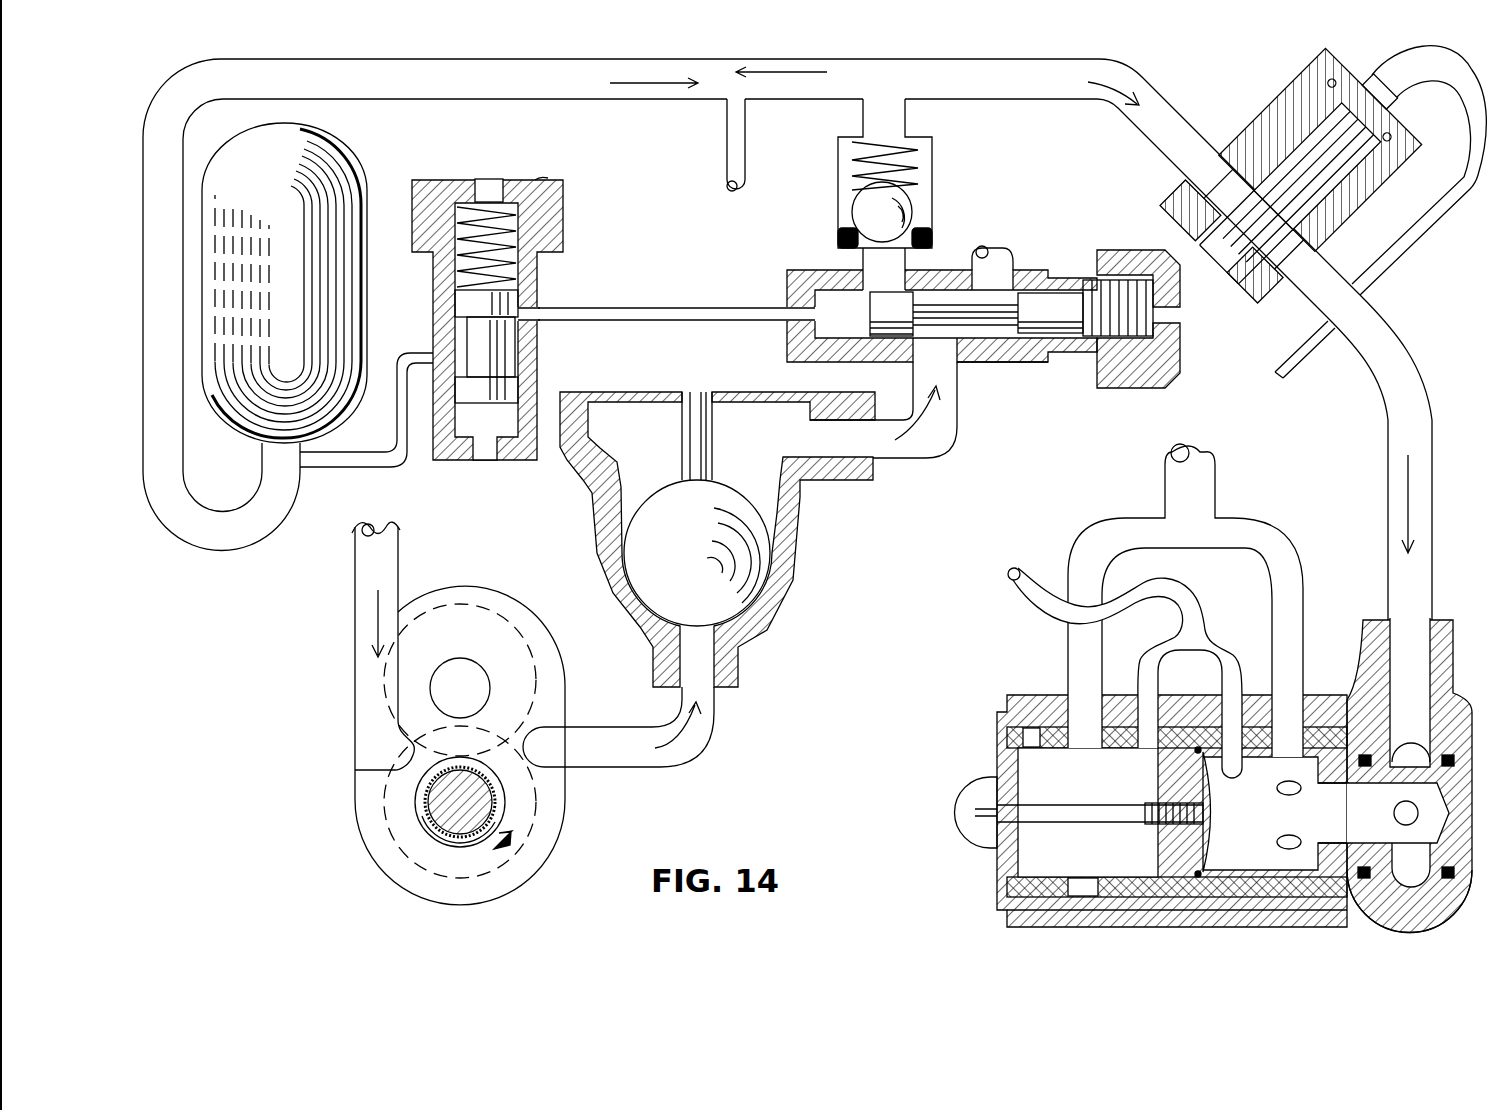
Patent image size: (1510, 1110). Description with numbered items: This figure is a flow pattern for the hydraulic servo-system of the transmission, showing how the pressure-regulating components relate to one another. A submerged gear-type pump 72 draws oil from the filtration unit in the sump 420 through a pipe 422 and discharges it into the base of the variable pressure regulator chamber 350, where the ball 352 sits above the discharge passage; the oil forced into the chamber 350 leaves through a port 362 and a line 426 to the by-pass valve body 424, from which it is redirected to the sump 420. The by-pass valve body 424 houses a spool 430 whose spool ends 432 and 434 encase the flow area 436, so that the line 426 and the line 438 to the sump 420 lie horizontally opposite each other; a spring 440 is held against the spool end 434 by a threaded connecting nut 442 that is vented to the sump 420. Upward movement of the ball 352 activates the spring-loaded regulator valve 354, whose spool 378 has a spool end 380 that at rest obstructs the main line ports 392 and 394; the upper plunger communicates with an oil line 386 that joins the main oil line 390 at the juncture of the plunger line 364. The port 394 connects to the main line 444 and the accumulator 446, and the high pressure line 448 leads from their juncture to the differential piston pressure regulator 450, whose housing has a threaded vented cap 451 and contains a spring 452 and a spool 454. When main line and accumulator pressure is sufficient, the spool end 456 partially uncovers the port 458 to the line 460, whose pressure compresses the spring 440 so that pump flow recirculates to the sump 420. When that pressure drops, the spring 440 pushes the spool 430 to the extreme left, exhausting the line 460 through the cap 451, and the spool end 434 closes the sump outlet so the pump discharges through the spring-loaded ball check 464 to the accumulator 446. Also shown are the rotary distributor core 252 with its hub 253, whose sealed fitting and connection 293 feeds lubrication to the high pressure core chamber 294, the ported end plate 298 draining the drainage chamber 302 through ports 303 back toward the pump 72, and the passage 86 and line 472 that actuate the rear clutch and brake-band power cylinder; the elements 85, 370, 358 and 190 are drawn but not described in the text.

The main line 444 is at (128, 348).
The accumulator 446 is at (300, 150).
The high pressure line 448 is at (395, 452).
The differential piston pressure regulator 450 is at (548, 178).
The threaded vented cap 451 is at (804, 303).
The spring 452 is at (510, 319).
The spool 454 is at (505, 343).
The spool end 456 is at (472, 305).
The port 458 is at (527, 316).
The line 460 is at (612, 320).
The vent tube 85 is at (746, 182).
The spring-loaded ball check 464 is at (920, 192).
The by-pass valve body 424 is at (998, 336).
The spool end 432 is at (882, 300).
The spool 430 is at (938, 296).
The line 438 is at (1006, 262).
The sump 420 is at (990, 248).
The flow area 436 is at (947, 335).
The spool end 434 is at (1055, 364).
The spring 440 is at (1097, 365).
The threaded connecting nut 442 is at (1178, 378).
The line 426 is at (891, 423).
The port 362 is at (853, 443).
The variable pressure regulator chamber 350 is at (699, 579).
The ball 352 is at (697, 553).
The tube 370 is at (690, 447).
The discharge pipe 358 is at (697, 645).
The gear-type pump 72 is at (508, 713).
The pipe 422 is at (380, 563).
The spring-loaded regulator valve 354 is at (1265, 186).
The spool 378 is at (1238, 262).
The spool end 380 is at (1175, 225).
The main line port 392 is at (1290, 267).
The main line port 394 is at (1185, 187).
The oil line 386 is at (1443, 215).
The main oil line 390 is at (1379, 457).
The plunger line 364 is at (1320, 335).
The housing 190 is at (1188, 703).
The passage 86 is at (1203, 514).
The line 472 is at (1030, 572).
The sealed fitting and connection 293 is at (1387, 763).
The high pressure core chamber 294 is at (1223, 815).
The drainage chamber 302 is at (1088, 812).
The ports 303 is at (990, 762).
The ported end plate 298 is at (1003, 884).
The core 252 is at (1303, 882).
The hub 253 is at (1425, 880).